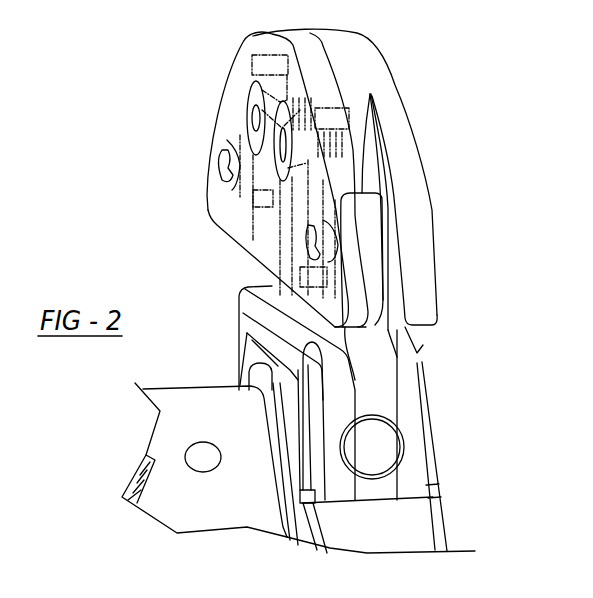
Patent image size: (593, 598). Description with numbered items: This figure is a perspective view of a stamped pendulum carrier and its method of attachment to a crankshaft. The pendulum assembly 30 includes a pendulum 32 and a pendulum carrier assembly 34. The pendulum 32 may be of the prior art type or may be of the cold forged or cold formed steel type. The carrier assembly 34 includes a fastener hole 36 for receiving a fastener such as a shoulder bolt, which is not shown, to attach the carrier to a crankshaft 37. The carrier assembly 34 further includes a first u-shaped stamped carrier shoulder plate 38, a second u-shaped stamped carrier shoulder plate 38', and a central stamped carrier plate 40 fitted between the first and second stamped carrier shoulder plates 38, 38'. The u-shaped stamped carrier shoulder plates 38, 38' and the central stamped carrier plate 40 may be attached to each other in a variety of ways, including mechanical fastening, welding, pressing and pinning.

The pendulum assembly 30 is at (450, 133).
The pendulum 32 is at (372, 36).
The pendulum carrier assembly 34 is at (422, 380).
The fastener hole 36 is at (385, 438).
The crankshaft 37 is at (400, 523).
The first u-shaped stamped carrier shoulder plate 38 is at (259, 379).
The second u-shaped stamped carrier shoulder plate 38' is at (445, 407).
The central stamped carrier plate 40 is at (383, 252).